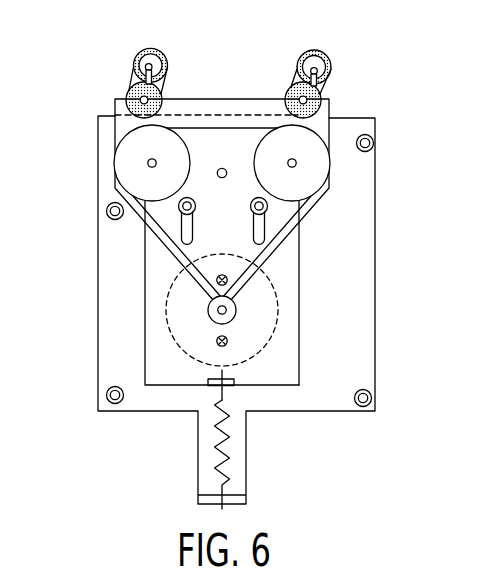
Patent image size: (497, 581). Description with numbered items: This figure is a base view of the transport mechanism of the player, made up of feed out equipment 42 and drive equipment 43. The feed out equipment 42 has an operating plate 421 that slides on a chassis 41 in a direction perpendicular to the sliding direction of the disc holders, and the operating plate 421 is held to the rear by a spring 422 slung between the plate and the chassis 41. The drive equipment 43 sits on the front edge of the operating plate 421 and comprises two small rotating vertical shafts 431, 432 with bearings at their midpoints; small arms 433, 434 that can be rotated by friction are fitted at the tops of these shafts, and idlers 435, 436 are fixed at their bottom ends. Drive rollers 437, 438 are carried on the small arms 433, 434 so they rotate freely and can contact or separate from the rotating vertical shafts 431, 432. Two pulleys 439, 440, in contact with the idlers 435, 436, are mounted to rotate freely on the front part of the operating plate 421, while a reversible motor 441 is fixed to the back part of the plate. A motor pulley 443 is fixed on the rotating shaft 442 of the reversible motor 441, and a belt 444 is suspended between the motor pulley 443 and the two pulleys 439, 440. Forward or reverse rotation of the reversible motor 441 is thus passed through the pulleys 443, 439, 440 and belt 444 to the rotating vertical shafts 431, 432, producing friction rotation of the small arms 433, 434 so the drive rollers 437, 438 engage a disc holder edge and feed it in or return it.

The chassis 41 is at (112, 278).
The feed out equipment 42 is at (158, 379).
The drive equipment 43 is at (347, 63).
The operating plate 421 is at (284, 266).
The spring 422 is at (220, 446).
The rotating vertical shaft 431 is at (118, 79).
The rotating vertical shaft 432 is at (302, 94).
The small arm 433 is at (152, 60).
The small arm 434 is at (298, 44).
The idler 435 is at (120, 92).
The idler 436 is at (314, 99).
The drive roller 437 is at (131, 48).
The drive roller 438 is at (325, 58).
The pulley 439 is at (115, 150).
The pulley 440 is at (317, 160).
The reversible motor 441 is at (271, 339).
The rotating shaft 442 is at (230, 308).
The motor pulley 443 is at (199, 308).
The belt 444 is at (308, 200).